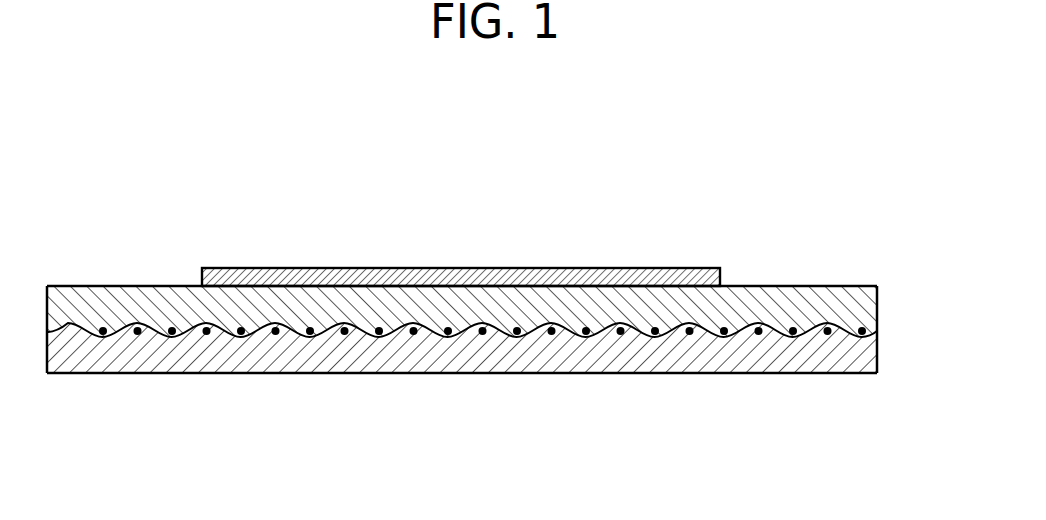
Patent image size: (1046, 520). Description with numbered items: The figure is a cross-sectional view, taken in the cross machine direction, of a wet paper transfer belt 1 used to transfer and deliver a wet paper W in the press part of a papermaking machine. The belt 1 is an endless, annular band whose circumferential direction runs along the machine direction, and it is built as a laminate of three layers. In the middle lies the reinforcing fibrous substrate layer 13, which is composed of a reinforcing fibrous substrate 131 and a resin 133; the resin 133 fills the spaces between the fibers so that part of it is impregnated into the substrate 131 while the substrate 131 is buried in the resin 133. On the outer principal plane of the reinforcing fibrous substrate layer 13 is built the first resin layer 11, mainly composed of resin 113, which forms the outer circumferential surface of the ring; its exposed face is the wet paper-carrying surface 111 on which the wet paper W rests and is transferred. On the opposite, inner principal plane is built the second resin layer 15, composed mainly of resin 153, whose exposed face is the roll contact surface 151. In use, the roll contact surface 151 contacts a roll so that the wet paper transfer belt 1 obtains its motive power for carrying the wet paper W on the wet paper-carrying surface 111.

The wet paper transfer belt 1 is at (133, 171).
The wet paper W is at (450, 267).
The first resin layer 11 is at (878, 300).
The wet paper-carrying surface 111 is at (763, 286).
The resin 113 is at (830, 310).
The reinforcing fibrous substrate layer 13 is at (878, 329).
The reinforcing fibrous substrate 131 is at (645, 340).
The resin 133 is at (747, 333).
The second resin layer 15 is at (878, 358).
The roll contact surface 151 is at (423, 375).
The resin 153 is at (535, 358).